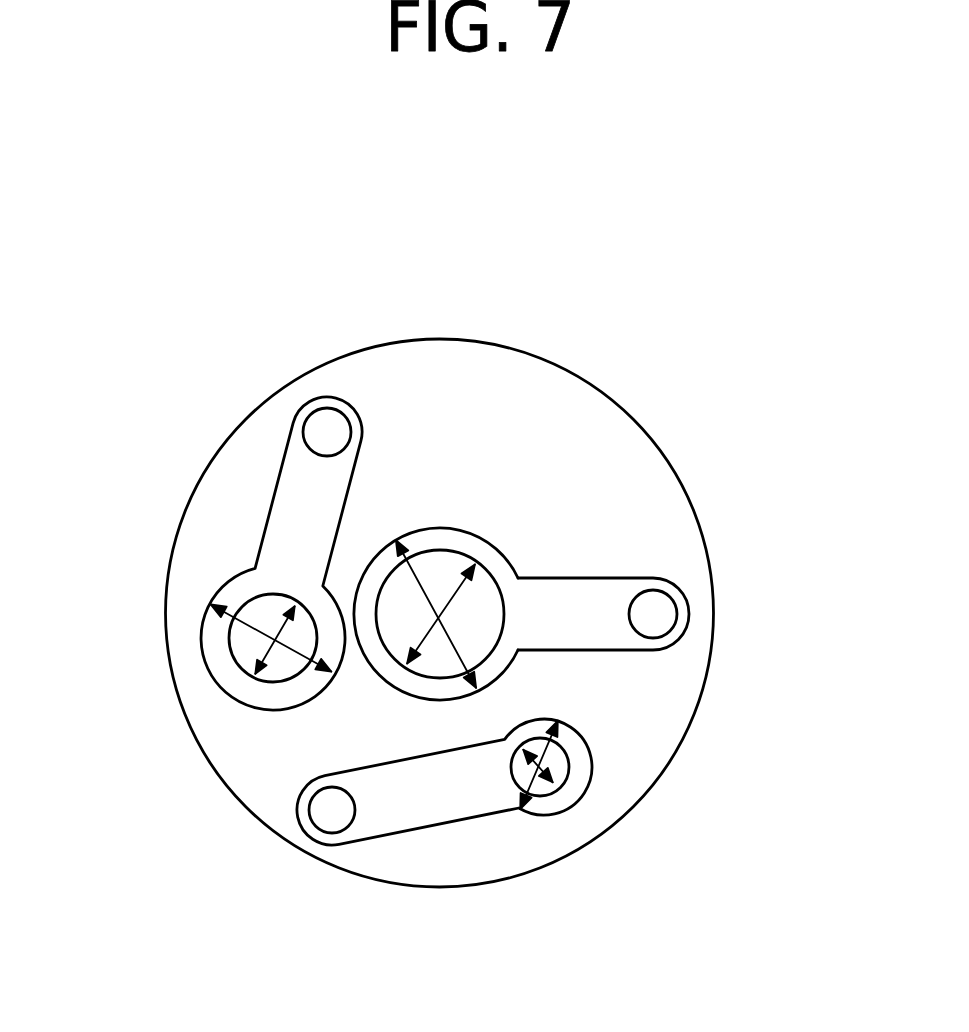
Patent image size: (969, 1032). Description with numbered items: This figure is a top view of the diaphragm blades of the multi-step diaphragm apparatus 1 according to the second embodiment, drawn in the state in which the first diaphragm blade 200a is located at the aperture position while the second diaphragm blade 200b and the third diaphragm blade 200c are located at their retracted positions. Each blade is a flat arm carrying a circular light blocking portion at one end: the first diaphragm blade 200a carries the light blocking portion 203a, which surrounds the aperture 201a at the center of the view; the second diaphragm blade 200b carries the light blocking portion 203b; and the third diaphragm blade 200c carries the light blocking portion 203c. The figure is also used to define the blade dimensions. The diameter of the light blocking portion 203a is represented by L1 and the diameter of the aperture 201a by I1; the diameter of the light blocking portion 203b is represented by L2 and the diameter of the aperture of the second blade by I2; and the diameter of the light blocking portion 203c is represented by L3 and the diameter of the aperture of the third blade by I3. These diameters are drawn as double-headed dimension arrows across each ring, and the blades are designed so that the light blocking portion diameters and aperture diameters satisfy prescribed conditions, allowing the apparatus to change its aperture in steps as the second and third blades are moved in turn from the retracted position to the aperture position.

The multi-step diaphragm apparatus 1 is at (797, 350).
The first diaphragm blade 200a is at (583, 577).
The second diaphragm blade 200b is at (272, 503).
The third diaphragm blade 200c is at (378, 838).
The aperture 201a is at (383, 630).
The light blocking portion 203a is at (423, 541).
The light blocking portion 203b is at (232, 682).
The light blocking portion 203c is at (580, 777).
The diameter of aperture of first diaphragm blade I1 is at (460, 591).
The diameter of light blocking portion of first diaphragm blade L1 is at (425, 543).
The diameter of aperture of second diaphragm blade I2 is at (262, 622).
The diameter of light blocking portion of second diaphragm blade L2 is at (245, 645).
The diameter of light blocking portion of third diaphragm blade L3 is at (535, 782).
The diameter of aperture of third diaphragm blade I3 is at (558, 783).